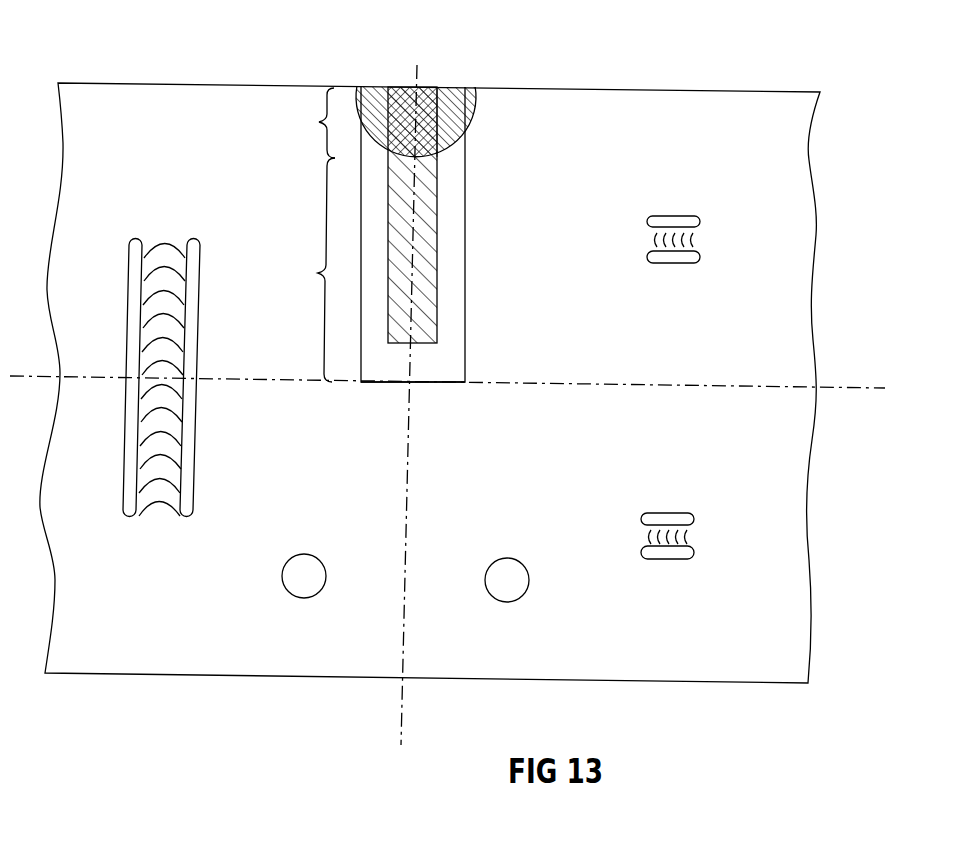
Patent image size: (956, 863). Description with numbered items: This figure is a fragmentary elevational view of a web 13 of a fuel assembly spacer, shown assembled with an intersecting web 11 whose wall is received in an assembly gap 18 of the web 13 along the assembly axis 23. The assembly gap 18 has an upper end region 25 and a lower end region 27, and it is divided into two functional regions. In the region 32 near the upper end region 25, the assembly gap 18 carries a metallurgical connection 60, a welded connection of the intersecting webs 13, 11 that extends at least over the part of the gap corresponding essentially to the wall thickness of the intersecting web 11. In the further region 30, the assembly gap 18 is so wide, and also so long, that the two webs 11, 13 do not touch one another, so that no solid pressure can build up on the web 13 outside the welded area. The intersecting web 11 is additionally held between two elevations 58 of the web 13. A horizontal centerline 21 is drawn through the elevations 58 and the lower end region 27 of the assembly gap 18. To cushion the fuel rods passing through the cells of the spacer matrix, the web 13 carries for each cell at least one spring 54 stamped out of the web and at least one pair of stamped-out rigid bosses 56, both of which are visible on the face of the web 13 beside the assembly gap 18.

The web 13 is at (641, 90).
The upper end region of the assembly gap 25 is at (375, 85).
The metallurgical connection 60 is at (460, 92).
The region of the assembly gap carrying the metallurgical connection 32 is at (310, 123).
The further region of the assembly gap 30 is at (309, 270).
The intersecting web 11 is at (397, 260).
The assembly gap 18 is at (462, 251).
The lower end region of the assembly gap 27 is at (435, 384).
The horizontal axis 21 is at (612, 388).
The assembly axis 23 is at (405, 573).
The spring 54 is at (189, 443).
The rigid bosses 56 is at (688, 260).
The elevations 58 is at (288, 576).